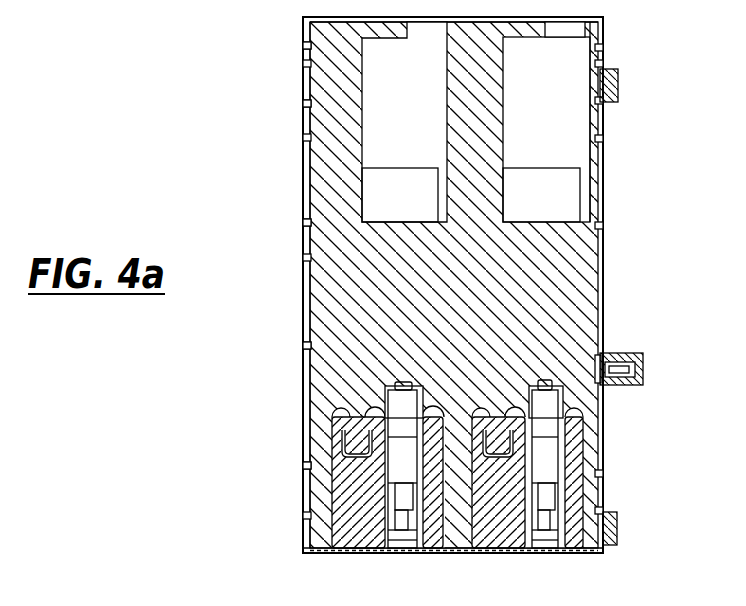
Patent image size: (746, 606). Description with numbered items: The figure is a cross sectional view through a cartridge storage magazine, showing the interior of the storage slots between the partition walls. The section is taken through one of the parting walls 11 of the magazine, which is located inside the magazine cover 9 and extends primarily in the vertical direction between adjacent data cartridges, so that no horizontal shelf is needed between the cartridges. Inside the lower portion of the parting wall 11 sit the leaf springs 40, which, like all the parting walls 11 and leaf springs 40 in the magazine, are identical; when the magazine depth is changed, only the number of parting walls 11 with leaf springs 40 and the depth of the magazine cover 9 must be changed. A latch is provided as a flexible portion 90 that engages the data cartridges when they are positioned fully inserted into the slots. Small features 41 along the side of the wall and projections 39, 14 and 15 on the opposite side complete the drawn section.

The magazine cover 9 is at (346, 552).
The parting wall 11 is at (485, 298).
The lateral projection 14 is at (642, 375).
The lower projection 15 is at (617, 537).
The upper projection 39 is at (618, 90).
The leaf spring 40 is at (580, 543).
The wall clips 41 is at (303, 500).
The flexible portion 90 is at (405, 498).